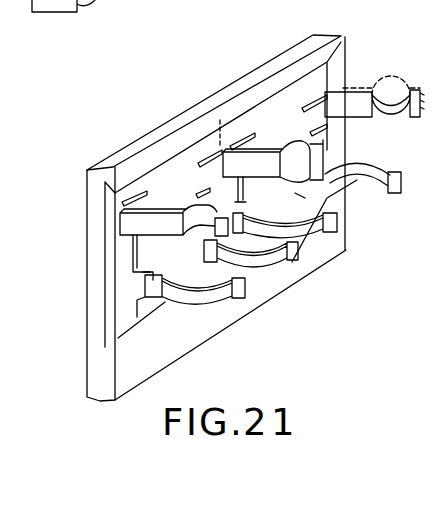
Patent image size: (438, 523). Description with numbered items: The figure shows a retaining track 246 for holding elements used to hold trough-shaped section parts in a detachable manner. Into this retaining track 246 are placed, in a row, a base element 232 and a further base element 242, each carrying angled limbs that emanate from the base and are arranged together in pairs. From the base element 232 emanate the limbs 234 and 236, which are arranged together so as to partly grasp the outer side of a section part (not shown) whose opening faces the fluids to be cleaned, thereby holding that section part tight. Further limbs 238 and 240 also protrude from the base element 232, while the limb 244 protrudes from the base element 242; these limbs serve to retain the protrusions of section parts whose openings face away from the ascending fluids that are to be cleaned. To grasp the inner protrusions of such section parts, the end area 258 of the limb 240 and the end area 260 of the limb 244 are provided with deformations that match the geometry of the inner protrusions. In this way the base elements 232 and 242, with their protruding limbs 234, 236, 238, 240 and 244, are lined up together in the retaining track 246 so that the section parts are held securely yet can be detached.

The base element 232 is at (168, 165).
The angled limb 234 is at (208, 296).
The angled limb 236 is at (293, 265).
The angled limb 238 is at (145, 218).
The limb 240 is at (330, 218).
The base element 242 is at (280, 112).
The limb 244 is at (350, 143).
The retaining track 246 is at (97, 268).
The end area 258 is at (291, 168).
The end area 260 is at (352, 186).